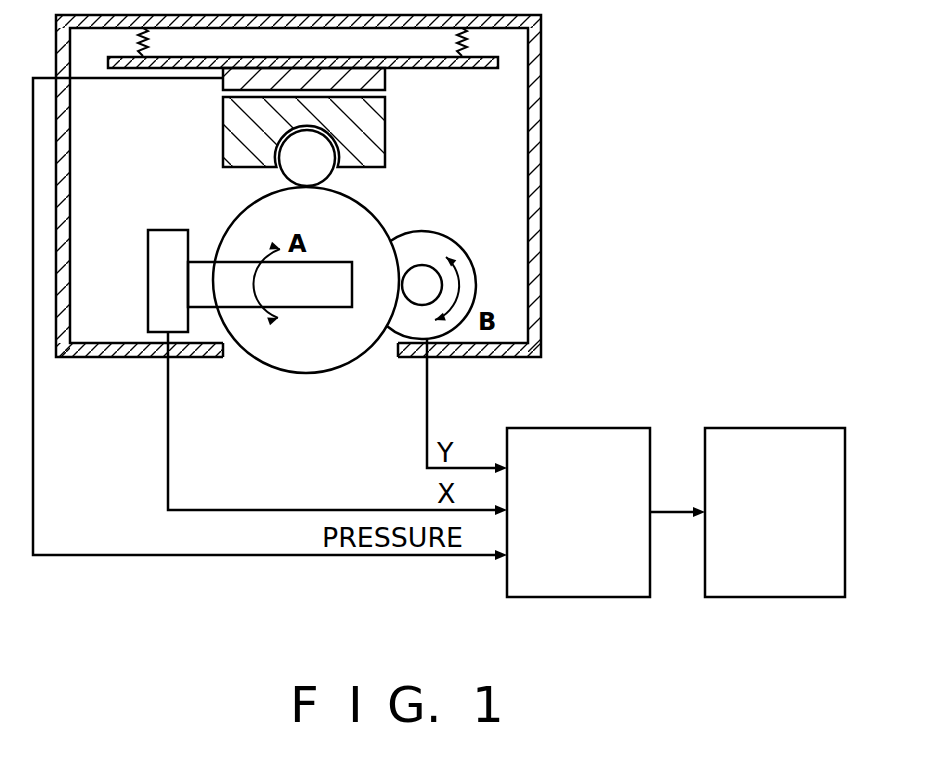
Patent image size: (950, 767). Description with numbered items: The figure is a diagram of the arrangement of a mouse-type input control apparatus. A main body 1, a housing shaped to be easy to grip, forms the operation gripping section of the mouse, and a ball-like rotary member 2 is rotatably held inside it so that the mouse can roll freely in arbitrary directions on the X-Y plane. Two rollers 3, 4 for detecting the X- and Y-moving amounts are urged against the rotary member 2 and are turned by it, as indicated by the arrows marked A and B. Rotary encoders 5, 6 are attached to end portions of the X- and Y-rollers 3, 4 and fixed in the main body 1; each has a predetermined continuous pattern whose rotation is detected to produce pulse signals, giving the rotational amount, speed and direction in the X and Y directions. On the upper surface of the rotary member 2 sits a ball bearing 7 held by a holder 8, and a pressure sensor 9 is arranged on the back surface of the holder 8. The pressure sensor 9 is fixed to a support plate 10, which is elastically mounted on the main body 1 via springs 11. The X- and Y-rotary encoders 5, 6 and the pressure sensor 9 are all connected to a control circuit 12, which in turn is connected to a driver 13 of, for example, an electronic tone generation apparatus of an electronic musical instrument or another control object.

The main body 1 is at (542, 153).
The rotary member 2 is at (273, 373).
The roller 3 is at (336, 310).
The roller 4 is at (425, 264).
The rotary encoder 5 is at (150, 295).
The rotary encoder 6 is at (475, 270).
The ball bearing 7 is at (293, 170).
The holder 8 is at (385, 133).
The pressure sensor 9 is at (385, 80).
The support plate 10 is at (487, 68).
The spring 11 is at (472, 35).
The control circuit 12 is at (648, 428).
The driver 13 is at (782, 430).